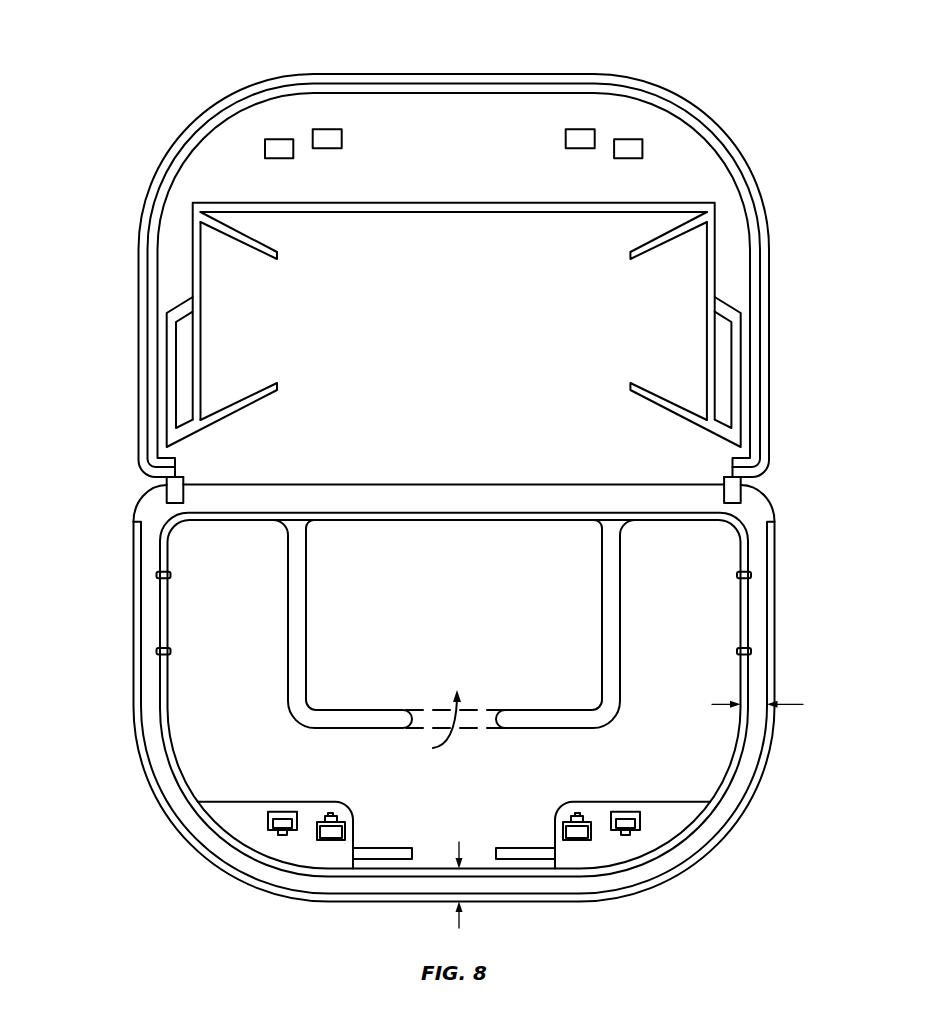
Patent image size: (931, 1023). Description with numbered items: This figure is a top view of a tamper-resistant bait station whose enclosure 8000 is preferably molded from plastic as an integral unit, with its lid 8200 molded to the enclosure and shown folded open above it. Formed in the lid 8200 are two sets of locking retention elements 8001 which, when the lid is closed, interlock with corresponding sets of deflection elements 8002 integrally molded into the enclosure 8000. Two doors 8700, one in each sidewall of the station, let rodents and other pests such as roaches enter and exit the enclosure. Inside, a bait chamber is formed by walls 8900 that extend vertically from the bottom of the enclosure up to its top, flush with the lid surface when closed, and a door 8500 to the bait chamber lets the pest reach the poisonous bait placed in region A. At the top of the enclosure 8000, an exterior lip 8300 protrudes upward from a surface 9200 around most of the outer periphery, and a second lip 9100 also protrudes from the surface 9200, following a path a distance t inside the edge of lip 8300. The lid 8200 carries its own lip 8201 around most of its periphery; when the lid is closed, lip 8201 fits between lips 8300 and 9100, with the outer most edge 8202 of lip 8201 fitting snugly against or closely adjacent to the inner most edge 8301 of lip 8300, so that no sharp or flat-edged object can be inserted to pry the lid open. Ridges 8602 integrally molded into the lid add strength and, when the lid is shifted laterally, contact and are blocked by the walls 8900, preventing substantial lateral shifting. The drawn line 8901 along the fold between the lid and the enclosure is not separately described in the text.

The lid 8200 is at (597, 35).
The lip 8201 is at (171, 152).
The outer most edge 8202 is at (338, 74).
The locking retention elements 8001 is at (282, 158).
The ridges 8602 is at (249, 248).
The base top surface 8901 is at (503, 484).
The inner most edge 8301 is at (145, 533).
The exterior lip 8300 is at (137, 700).
The second lip 9100 is at (163, 696).
The doors 8700 is at (170, 612).
The walls 8900 is at (306, 618).
The door 8500 is at (422, 726).
The surface 9200 is at (180, 811).
The deflection elements 8002 is at (283, 811).
The enclosure 8000 is at (425, 691).